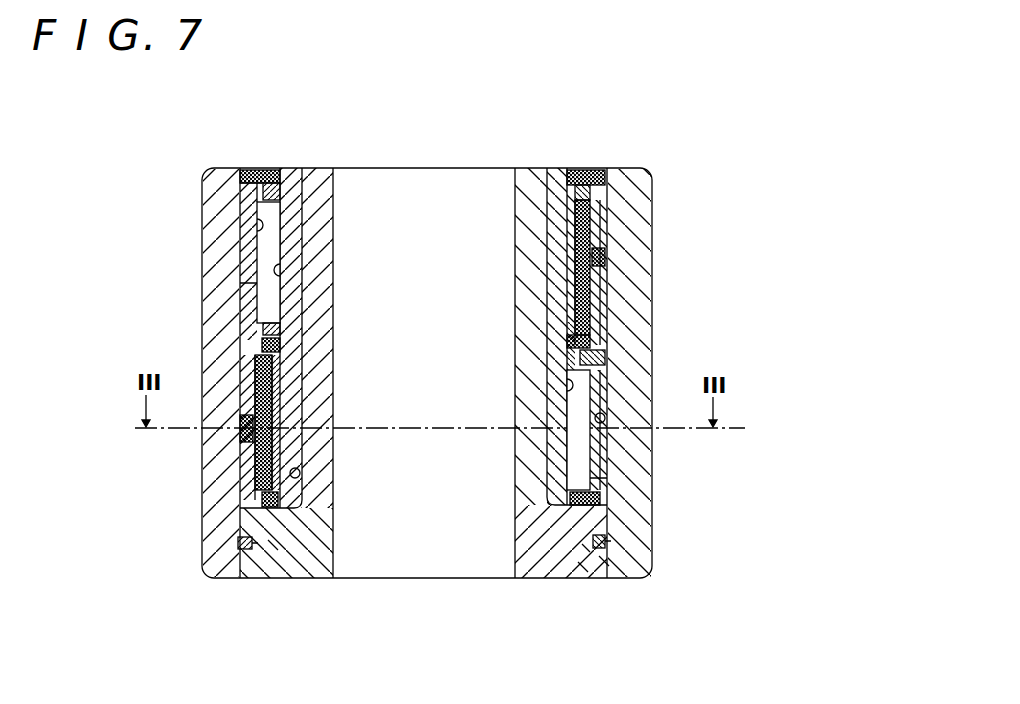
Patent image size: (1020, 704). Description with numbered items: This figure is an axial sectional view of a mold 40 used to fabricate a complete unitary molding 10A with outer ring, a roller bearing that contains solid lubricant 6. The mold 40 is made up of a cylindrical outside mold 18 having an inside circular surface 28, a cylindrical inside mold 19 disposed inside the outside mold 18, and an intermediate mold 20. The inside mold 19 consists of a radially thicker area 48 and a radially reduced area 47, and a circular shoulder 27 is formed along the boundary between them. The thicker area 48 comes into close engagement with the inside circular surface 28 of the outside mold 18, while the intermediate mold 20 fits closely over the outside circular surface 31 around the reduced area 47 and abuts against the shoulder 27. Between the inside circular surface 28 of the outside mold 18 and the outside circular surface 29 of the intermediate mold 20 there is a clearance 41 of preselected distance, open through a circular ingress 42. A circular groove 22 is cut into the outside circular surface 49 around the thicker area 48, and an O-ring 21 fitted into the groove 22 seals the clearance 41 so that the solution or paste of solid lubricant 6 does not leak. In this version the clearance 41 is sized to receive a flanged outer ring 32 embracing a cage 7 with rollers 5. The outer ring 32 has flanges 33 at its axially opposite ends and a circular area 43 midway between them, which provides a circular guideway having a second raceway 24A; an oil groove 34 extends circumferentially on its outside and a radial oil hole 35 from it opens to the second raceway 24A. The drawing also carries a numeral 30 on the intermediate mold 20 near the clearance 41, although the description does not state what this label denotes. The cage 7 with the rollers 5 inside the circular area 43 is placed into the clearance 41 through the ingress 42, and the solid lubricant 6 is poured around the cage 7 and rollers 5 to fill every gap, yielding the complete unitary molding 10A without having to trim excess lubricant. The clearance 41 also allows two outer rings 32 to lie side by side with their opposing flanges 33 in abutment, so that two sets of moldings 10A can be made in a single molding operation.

The rollers 5 is at (258, 232).
The solid lubricant 6 is at (248, 171).
The cage 7 is at (279, 173).
The complete unitary molding with outer ring 10A is at (247, 265).
The outside mold 18 is at (215, 550).
The inside mold 19 is at (320, 240).
The intermediate mold 20 is at (305, 197).
The O-ring 21 is at (212, 579).
The circular groove 22 is at (256, 550).
The second raceway 24A is at (245, 194).
The circular shoulder 27 is at (273, 546).
The inside circular surface 28 is at (246, 510).
The outside circular surface 29 is at (283, 280).
The cup wall 30 is at (303, 447).
The outside circular surface 31 is at (300, 474).
The flanged outer ring 32 is at (250, 299).
The flanges 33 is at (265, 171).
The oil groove 34 is at (606, 406).
The radial oil hole 35 is at (248, 433).
The mold 40 is at (658, 174).
The clearance 41 is at (252, 356).
The circular ingress 42 is at (253, 170).
The circular area 43 is at (252, 283).
The radially reduced area 47 is at (533, 341).
The radially thicker area 48 is at (583, 568).
The outside circular surface 49 is at (604, 561).